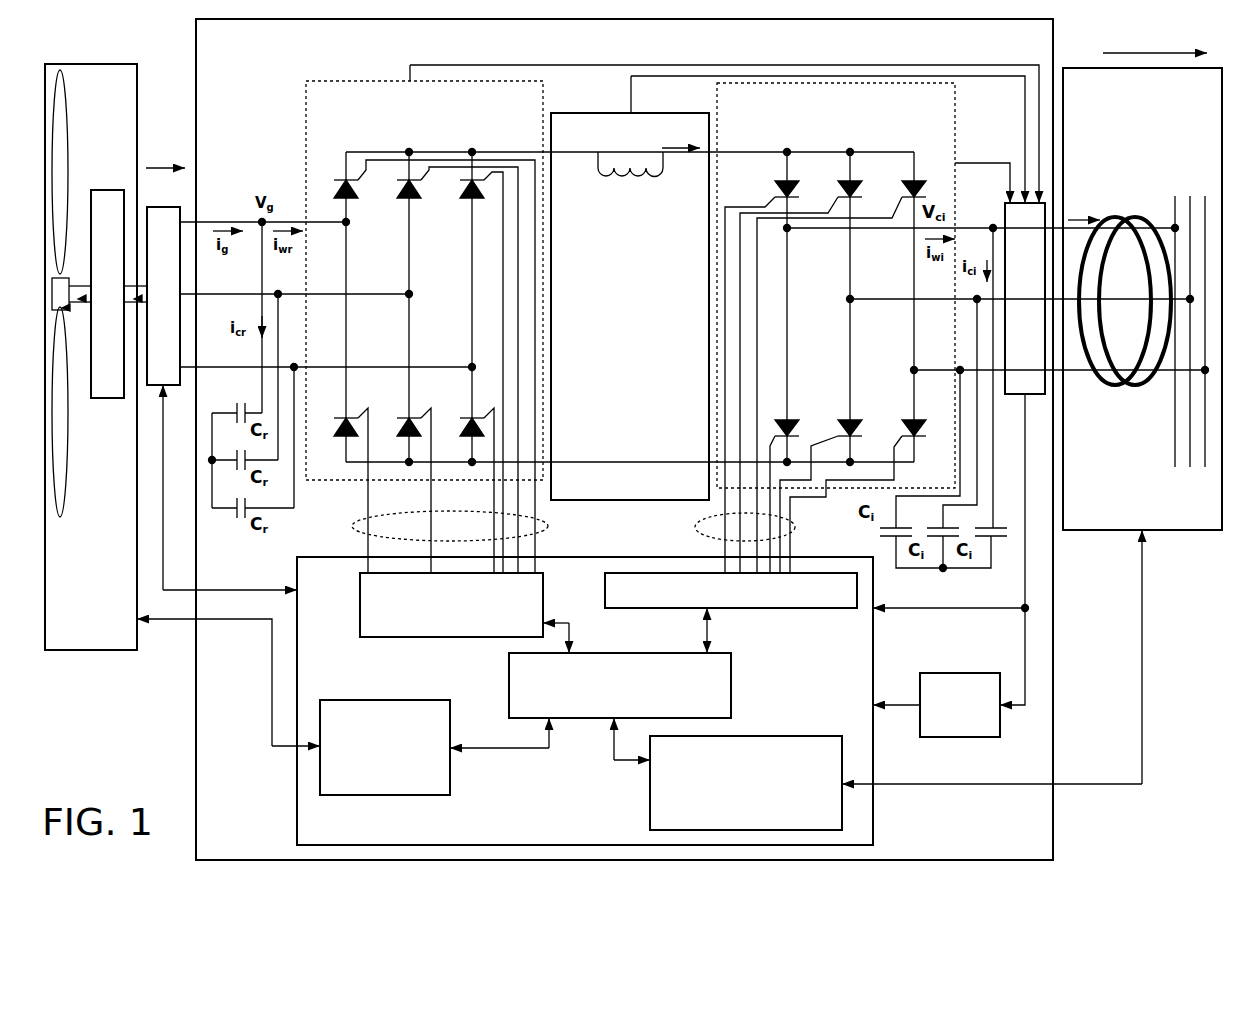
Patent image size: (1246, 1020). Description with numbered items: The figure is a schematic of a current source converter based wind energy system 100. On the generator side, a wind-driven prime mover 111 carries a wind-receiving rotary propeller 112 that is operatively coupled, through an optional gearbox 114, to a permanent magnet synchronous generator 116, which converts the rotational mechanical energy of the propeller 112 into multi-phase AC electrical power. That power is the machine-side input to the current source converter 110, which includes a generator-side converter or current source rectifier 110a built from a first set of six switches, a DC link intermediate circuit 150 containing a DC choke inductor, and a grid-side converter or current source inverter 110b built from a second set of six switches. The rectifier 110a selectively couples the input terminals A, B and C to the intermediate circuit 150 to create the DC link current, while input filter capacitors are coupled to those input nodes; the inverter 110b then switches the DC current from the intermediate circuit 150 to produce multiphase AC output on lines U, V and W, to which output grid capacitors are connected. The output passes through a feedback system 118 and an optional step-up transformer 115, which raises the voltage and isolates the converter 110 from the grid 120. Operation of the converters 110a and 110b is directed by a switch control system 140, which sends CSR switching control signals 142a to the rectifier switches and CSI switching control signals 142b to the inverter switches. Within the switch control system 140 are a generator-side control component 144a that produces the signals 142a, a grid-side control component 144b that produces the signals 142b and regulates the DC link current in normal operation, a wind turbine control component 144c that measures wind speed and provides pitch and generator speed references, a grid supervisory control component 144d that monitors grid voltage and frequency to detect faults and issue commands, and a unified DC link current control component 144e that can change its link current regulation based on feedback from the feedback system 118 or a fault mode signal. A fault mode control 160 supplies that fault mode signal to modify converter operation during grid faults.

The wind energy system 100 is at (108, 28).
The current source converter 110 is at (196, 40).
The generator-side converter (current source rectifier) 110a is at (306, 113).
The grid-side converter (current source inverter) 110b is at (717, 101).
The wind-driven prime mover 111 is at (90, 651).
The wind-receiving rotary propeller 112 is at (66, 102).
The gearbox 114 is at (118, 190).
The step-up transformer 115 is at (1130, 385).
The permanent magnet synchronous generator 116 is at (181, 205).
The feedback system 118 is at (1005, 214).
The grid 120 is at (1158, 168).
The switch control system 140 is at (297, 828).
The CSR switching control signals 142a is at (352, 527).
The CSI switching control signals 142b is at (695, 527).
The generator-side (CSR) control component 144a is at (360, 603).
The grid-side (CSI) control component 144b is at (605, 578).
The wind turbine control component 144c is at (385, 700).
The grid supervisory control component 144d is at (650, 784).
The unified DC link current control component 144e is at (509, 683).
The DC link intermediate circuit 150 is at (630, 500).
The fault mode control 160 is at (958, 673).